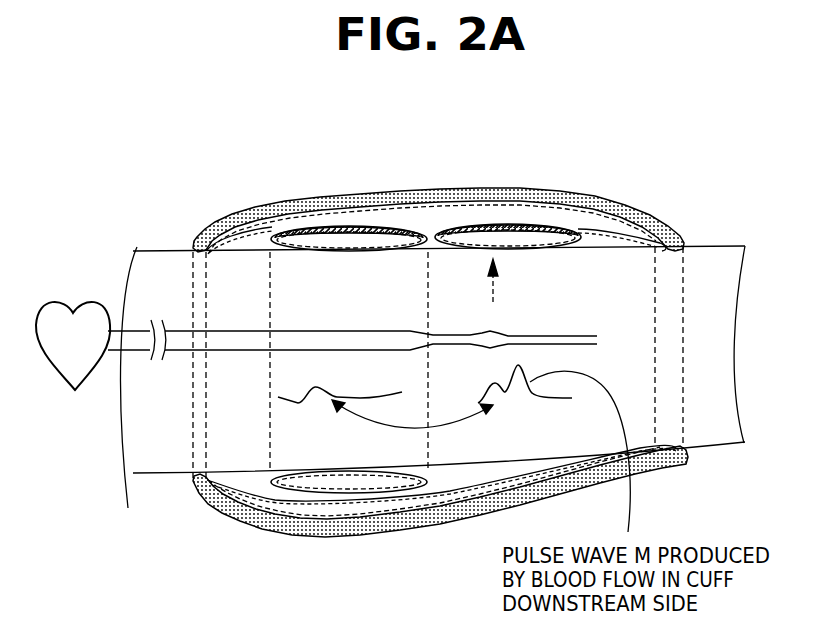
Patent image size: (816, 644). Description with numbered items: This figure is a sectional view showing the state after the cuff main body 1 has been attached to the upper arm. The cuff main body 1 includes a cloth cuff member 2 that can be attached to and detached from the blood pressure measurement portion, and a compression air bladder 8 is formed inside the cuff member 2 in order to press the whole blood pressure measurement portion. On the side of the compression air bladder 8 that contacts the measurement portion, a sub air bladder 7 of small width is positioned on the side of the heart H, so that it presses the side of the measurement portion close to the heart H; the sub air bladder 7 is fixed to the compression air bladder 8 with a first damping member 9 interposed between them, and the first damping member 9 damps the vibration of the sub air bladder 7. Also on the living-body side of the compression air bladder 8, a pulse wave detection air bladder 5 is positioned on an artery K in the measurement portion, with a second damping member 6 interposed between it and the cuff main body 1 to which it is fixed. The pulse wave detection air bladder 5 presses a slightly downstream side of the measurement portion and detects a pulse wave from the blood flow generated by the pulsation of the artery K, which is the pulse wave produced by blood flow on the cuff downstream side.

The cuff main body 1 is at (590, 120).
The cloth cuff member 2 is at (615, 198).
The pulse wave detection air bladder 5 is at (530, 237).
The second damping member 6 is at (498, 220).
The sub air bladder 7 is at (341, 235).
The compression air bladder 8 is at (433, 218).
The first damping member 9 is at (397, 230).
The heart H is at (52, 374).
The artery K is at (362, 338).